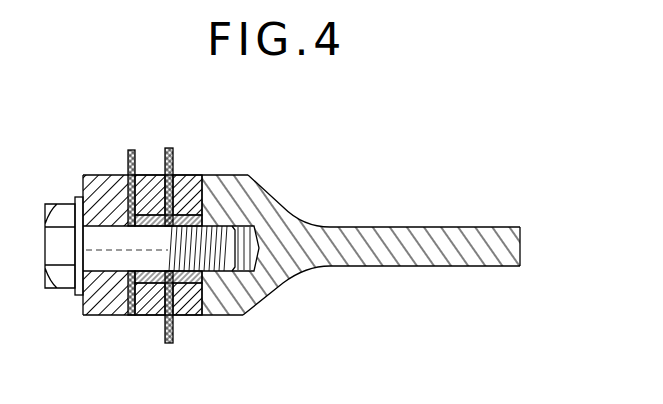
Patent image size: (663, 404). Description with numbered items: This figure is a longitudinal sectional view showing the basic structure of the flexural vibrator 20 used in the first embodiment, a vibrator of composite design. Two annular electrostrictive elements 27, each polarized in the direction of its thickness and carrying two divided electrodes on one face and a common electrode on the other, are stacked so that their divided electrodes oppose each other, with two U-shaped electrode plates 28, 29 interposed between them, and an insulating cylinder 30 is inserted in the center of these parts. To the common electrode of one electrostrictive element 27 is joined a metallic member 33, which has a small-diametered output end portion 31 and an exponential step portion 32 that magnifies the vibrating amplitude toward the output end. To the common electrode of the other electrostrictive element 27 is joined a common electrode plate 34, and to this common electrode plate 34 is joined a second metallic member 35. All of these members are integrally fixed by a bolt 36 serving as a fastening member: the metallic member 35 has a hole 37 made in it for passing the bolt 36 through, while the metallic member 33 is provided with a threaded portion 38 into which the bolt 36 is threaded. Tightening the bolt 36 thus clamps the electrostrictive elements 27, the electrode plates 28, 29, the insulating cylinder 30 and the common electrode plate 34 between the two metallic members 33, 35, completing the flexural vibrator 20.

The flexural vibrator 20 is at (232, 177).
The electrostrictive element 27 is at (152, 178).
The U-shaped electrode plate 28 is at (170, 148).
The U-shaped electrode plate 29 is at (174, 343).
The insulating cylinder 30 is at (148, 303).
The output end portion 31 is at (522, 242).
The exponential step portion 32 is at (283, 207).
The metallic member 33 is at (375, 227).
The common electrode plate 34 is at (128, 150).
The metallic member 35 is at (117, 316).
The bolt 36 is at (107, 237).
The hole 37 is at (107, 278).
The threaded portion 38 is at (257, 279).